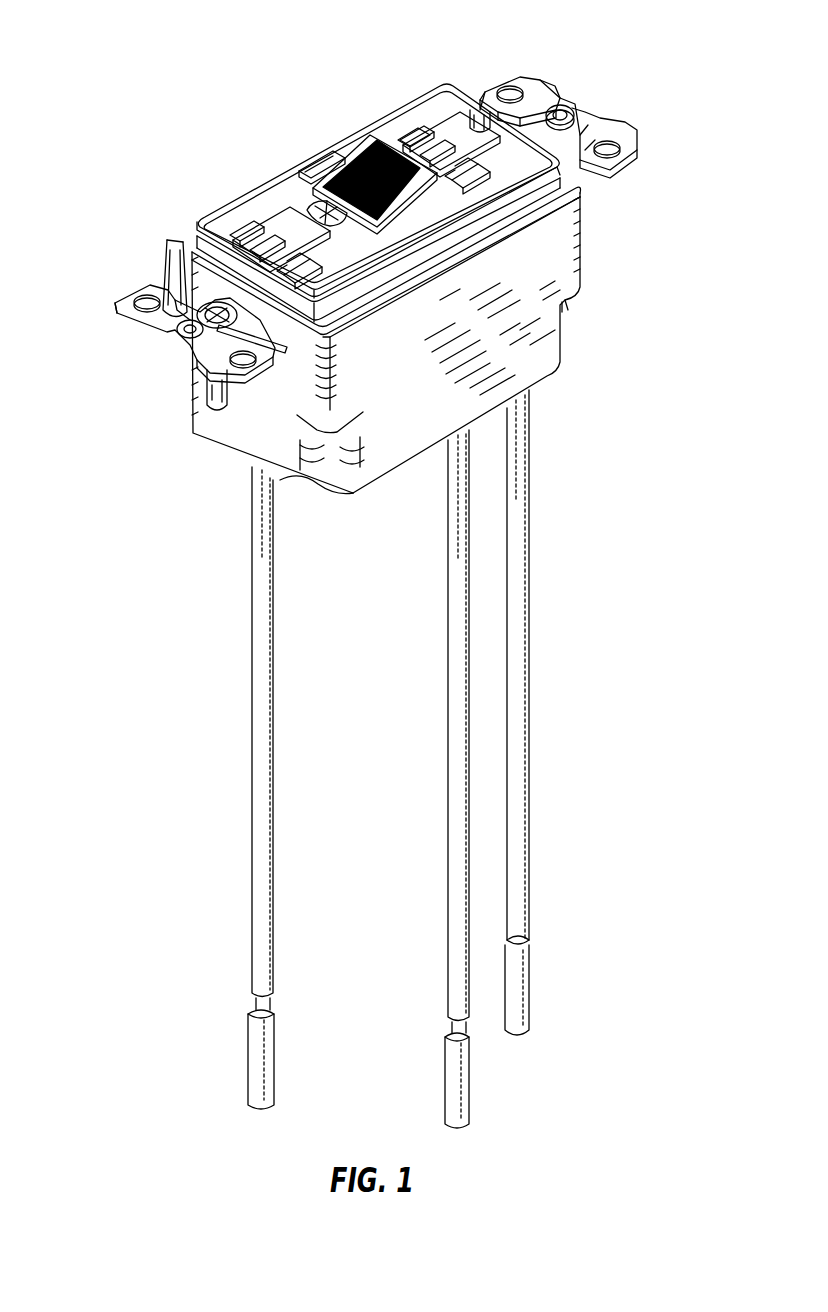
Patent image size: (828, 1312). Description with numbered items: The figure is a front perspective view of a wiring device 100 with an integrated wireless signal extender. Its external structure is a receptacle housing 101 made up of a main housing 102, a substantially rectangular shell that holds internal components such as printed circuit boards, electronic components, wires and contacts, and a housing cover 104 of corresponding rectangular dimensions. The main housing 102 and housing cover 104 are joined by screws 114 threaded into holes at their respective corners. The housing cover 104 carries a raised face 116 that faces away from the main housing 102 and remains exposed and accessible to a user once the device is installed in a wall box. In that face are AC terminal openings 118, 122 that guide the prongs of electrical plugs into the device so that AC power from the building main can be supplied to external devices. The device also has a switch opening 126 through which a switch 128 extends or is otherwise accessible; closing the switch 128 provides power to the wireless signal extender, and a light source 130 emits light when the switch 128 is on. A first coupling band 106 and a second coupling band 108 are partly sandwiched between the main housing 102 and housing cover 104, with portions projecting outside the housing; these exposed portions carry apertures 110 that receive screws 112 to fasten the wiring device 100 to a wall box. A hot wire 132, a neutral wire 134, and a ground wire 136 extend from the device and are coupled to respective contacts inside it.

The wiring device 100 is at (132, 48).
The receptacle housing 101 is at (535, 313).
The main housing 102 is at (582, 255).
The housing cover 104 is at (582, 208).
The first coupling band 106 is at (528, 72).
The second coupling band 108 is at (118, 315).
The apertures 110 is at (560, 107).
The screws 112 is at (485, 100).
The screws 114 is at (572, 303).
The raised face 116 is at (267, 190).
The AC terminal opening 118 is at (432, 118).
The AC terminal opening 122 is at (243, 227).
The switch opening 126 is at (402, 133).
The switch 128 is at (347, 157).
The light source 130 is at (302, 168).
The hot wire 132 is at (277, 668).
The neutral wire 134 is at (447, 767).
The ground wire 136 is at (530, 640).